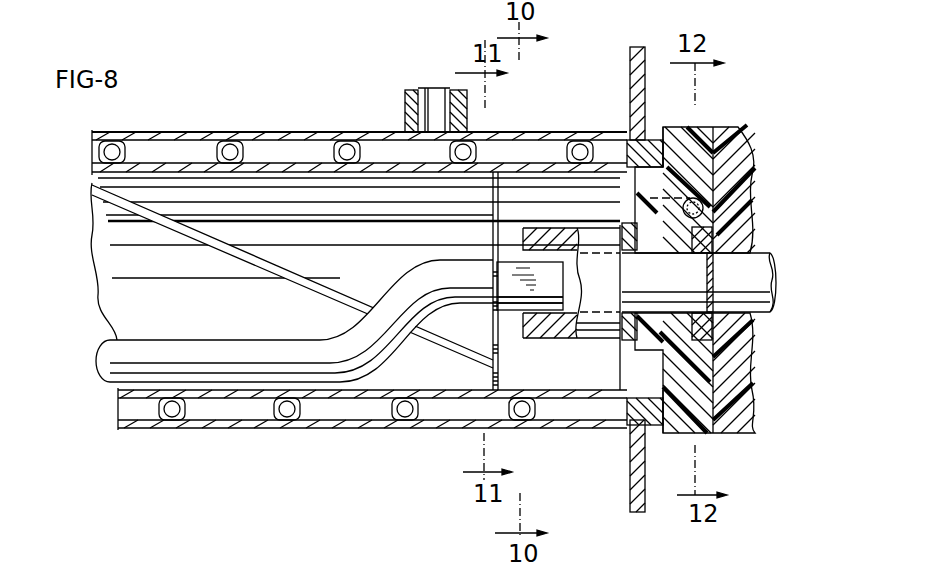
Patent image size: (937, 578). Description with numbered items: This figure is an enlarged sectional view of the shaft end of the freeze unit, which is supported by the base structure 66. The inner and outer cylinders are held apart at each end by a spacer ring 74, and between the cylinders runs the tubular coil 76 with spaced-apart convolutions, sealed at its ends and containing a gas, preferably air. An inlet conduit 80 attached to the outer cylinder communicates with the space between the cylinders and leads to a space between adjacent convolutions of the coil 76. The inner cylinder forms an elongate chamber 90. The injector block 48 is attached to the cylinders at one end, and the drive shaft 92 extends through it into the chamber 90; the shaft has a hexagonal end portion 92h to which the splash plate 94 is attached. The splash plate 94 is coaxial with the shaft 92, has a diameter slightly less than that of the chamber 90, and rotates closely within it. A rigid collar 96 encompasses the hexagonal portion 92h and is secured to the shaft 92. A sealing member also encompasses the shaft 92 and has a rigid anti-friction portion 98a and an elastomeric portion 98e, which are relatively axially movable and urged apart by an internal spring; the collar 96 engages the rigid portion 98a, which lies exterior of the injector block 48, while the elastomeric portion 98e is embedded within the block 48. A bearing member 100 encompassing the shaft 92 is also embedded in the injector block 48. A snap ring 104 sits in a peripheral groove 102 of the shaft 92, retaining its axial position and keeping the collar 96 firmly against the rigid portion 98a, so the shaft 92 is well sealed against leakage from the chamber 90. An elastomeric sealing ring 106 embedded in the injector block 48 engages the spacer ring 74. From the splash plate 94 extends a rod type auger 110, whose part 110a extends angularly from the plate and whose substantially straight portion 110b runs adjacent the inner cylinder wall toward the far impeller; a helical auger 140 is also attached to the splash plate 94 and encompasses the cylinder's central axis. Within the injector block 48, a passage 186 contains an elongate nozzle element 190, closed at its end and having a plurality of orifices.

The injector block 48 is at (703, 127).
The base structure 66 is at (630, 72).
The spacer ring 74 is at (625, 132).
The tubular coil 76 is at (138, 132).
The inlet conduit 80 is at (405, 102).
The elongate chamber 90 is at (207, 319).
The drive shaft 92 is at (763, 272).
The hexagonal end portion 92h is at (517, 290).
The splash plate 94 is at (490, 211).
The rigid collar 96 is at (603, 330).
The rigid anti-friction portion 98a is at (627, 237).
The elastomeric portion 98e is at (655, 238).
The bearing member 100 is at (712, 340).
The peripheral groove 102 is at (706, 272).
The snap ring 104 is at (703, 336).
The elastomeric sealing ring 106 is at (671, 114).
The rod type auger 110 is at (447, 270).
The angular part 110a is at (420, 282).
The substantially straight portion 110b is at (255, 353).
The helical auger 140 is at (260, 249).
The passage 186 is at (706, 207).
The elongate nozzle element 190 is at (731, 186).